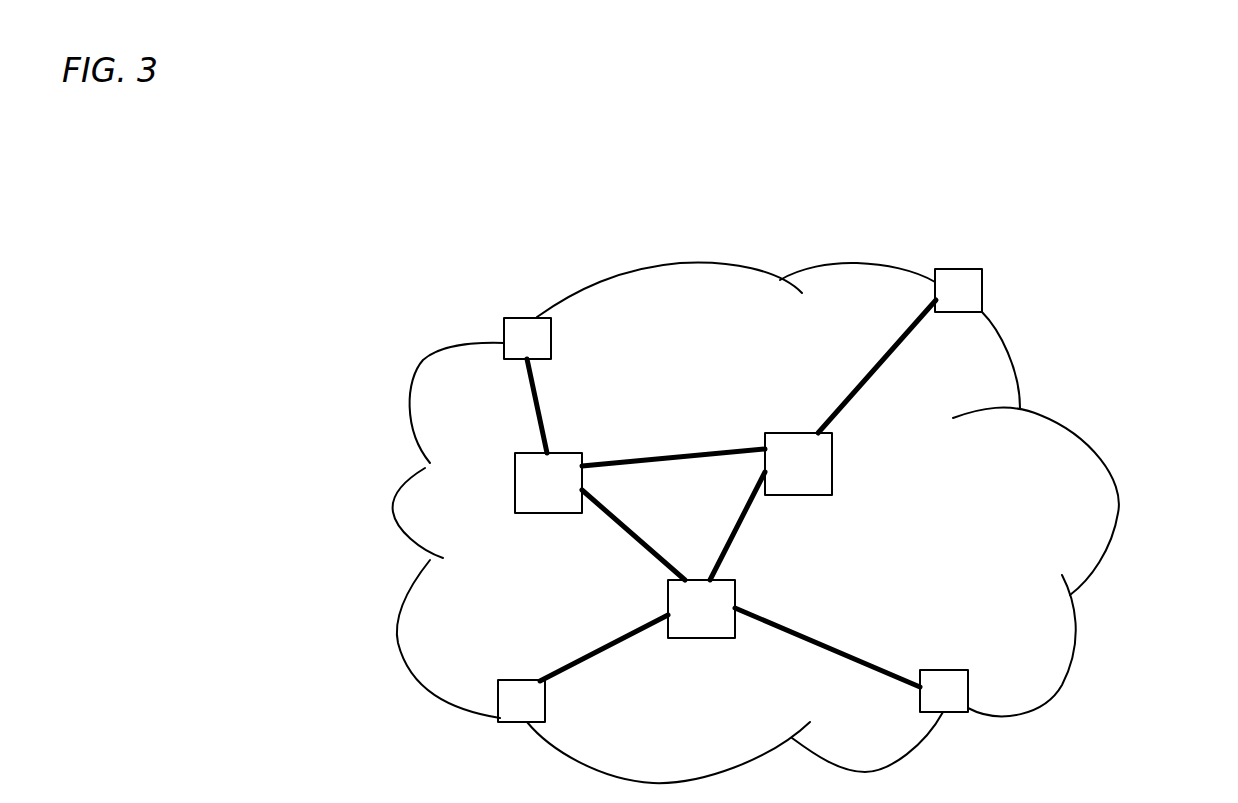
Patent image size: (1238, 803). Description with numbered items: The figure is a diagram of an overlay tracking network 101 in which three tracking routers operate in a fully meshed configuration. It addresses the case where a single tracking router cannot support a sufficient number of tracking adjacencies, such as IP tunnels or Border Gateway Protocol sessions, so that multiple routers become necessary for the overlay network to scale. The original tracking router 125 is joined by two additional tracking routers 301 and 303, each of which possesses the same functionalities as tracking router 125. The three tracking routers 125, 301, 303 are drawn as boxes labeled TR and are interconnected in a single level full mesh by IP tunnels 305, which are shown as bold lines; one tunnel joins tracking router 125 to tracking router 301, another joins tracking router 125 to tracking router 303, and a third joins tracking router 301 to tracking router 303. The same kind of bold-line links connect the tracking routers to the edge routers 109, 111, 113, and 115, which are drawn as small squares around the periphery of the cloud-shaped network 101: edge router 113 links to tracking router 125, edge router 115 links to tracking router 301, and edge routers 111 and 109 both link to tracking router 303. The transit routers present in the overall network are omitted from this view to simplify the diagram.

The wireless network 101 is at (1118, 513).
The edge router 109 is at (968, 688).
The edge router 111 is at (498, 702).
The edge router 113 is at (551, 337).
The edge router 115 is at (982, 290).
The tracking router 125 is at (513, 483).
The tracking router 301 is at (832, 463).
The tracking router 303 is at (735, 592).
The IP tunnels 305 is at (642, 460).